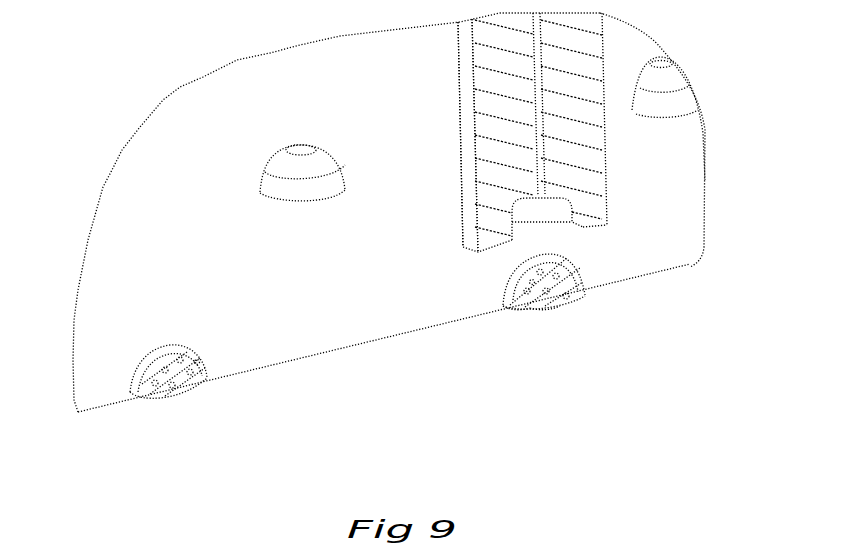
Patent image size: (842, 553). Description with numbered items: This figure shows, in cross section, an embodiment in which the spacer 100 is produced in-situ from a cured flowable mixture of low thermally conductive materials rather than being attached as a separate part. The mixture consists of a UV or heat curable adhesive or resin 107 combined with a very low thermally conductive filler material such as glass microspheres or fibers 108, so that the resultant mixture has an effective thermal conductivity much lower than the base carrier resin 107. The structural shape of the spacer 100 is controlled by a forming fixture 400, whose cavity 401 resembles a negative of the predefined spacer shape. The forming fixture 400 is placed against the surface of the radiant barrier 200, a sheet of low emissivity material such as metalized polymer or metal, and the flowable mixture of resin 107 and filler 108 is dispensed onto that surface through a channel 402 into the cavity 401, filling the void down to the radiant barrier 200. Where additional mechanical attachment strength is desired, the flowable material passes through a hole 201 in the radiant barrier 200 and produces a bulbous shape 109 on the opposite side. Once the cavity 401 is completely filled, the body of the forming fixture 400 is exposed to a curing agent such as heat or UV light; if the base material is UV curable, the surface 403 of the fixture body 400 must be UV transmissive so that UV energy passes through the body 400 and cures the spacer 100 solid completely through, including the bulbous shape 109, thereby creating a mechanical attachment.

The spacer 100 is at (160, 347).
The radiant barrier 200 is at (343, 300).
The hole 201 is at (528, 310).
The adhesive or resin 107 is at (573, 277).
The filler material 108 is at (540, 288).
The bulbous shape 109 is at (545, 310).
The forming fixture 400 is at (603, 49).
The cavity 401 is at (553, 209).
The channel 402 is at (540, 82).
The surface of the fixture body 403 is at (472, 227).